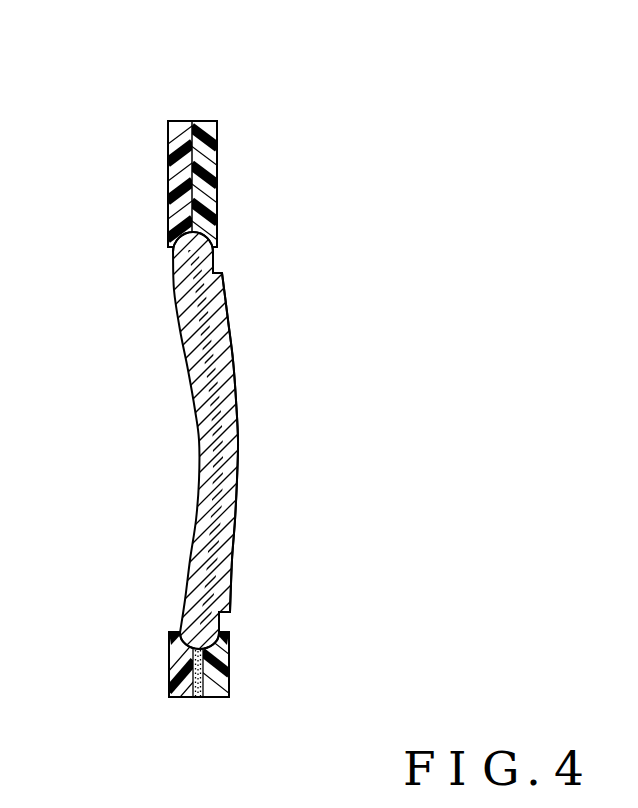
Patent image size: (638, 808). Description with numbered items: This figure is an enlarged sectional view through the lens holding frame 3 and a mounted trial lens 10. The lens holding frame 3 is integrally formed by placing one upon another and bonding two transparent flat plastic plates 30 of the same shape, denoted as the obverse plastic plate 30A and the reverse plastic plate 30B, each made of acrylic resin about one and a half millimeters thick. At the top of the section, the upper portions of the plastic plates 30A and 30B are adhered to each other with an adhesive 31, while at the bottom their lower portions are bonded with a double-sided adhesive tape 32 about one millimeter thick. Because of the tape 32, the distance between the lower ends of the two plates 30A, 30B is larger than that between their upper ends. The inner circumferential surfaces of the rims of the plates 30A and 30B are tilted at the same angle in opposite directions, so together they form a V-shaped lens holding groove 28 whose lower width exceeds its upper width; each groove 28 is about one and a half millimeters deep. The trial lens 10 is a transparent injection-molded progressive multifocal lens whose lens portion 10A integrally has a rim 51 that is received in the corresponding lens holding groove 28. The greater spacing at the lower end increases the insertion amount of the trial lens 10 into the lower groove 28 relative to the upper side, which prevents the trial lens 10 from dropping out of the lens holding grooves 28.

The lens holding frame 3 is at (243, 144).
The trial lens 10 is at (252, 427).
The lens portion 10A is at (233, 553).
The lens holding groove 28 is at (175, 272).
The transparent flat plastic plate 30 is at (127, 62).
The obverse plastic plate 30A is at (208, 121).
The reverse plastic plate 30B is at (176, 121).
The adhesive 31 is at (190, 173).
The double-sided adhesive tape 32 is at (198, 697).
The rim 51 is at (221, 620).